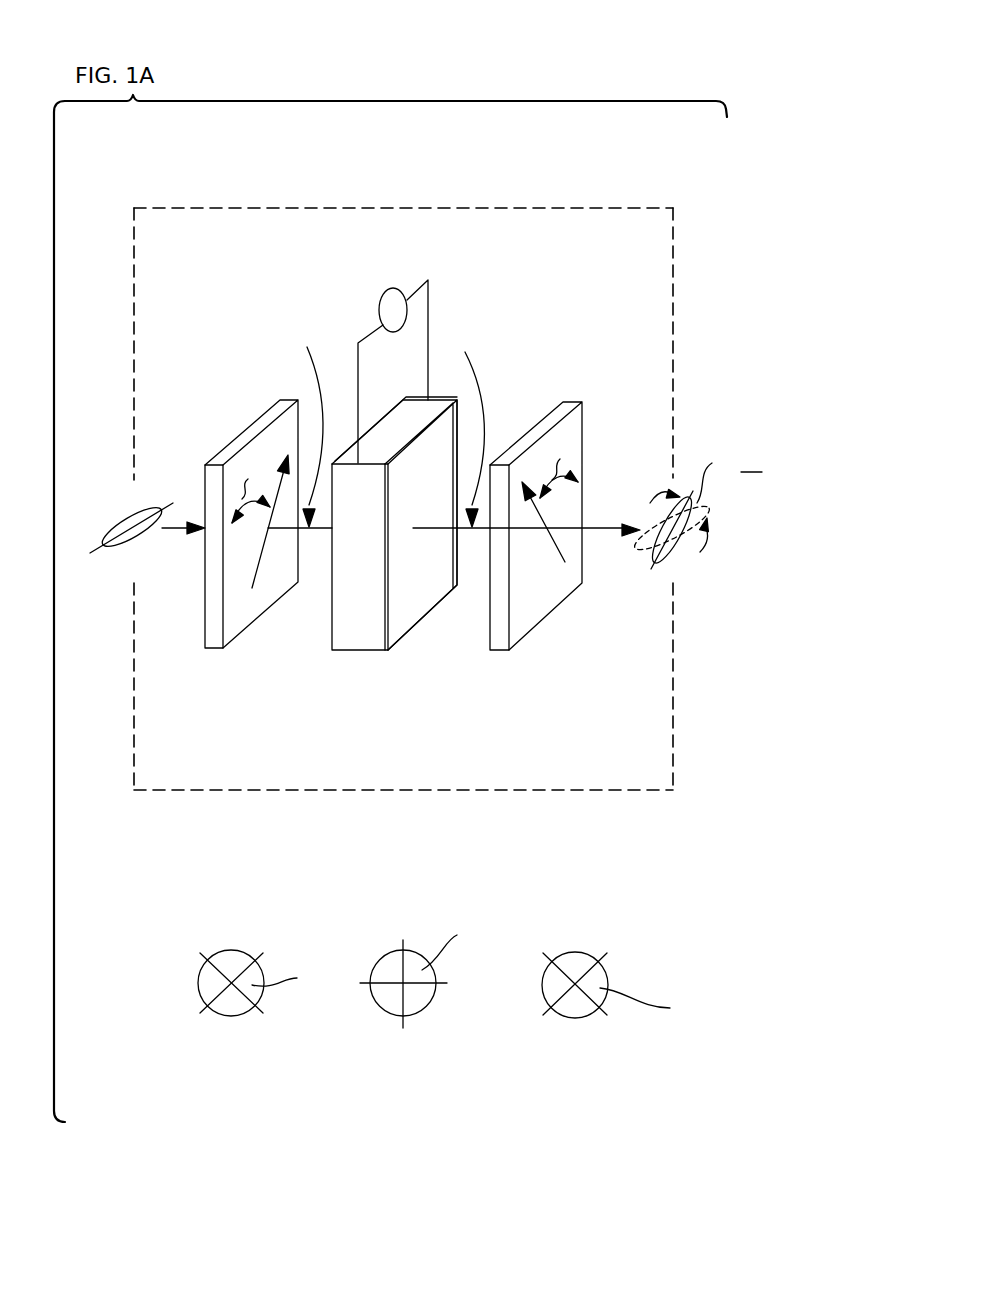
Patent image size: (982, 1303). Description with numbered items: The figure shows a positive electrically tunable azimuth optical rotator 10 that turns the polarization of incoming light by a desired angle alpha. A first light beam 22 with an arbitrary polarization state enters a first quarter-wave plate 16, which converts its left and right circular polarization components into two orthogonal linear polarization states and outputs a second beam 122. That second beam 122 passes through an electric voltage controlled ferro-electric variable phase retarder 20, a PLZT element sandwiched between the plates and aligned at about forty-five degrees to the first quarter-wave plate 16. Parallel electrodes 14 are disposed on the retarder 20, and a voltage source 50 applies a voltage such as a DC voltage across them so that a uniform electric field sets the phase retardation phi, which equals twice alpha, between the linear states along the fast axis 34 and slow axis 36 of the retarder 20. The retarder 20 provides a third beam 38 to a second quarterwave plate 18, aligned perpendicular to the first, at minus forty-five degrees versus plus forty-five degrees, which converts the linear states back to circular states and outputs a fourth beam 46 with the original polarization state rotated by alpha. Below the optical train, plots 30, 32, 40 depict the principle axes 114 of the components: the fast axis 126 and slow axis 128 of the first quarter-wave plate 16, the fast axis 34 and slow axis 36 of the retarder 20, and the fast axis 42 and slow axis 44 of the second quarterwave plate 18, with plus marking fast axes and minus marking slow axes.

The rotator 10 is at (675, 352).
The electrodes 14 is at (355, 650).
The first quarter-wave plate 16 is at (212, 650).
The second quarterwave plate 18 is at (498, 650).
The variable phase retarder 20 is at (420, 600).
The first light beam 22 is at (178, 525).
The Poincaré sphere diagram of input wave plate 30 is at (234, 995).
The Poincaré sphere diagram of crystal 32 is at (389, 1010).
The fast axis 34 is at (442, 988).
The slow axis 36 is at (398, 942).
The third beam 38 is at (470, 428).
The Poincaré sphere diagram of output wave plate 40 is at (631, 987).
The fast axis 42 is at (602, 1008).
The slow axis 44 is at (552, 552).
The fourth beam 46 is at (608, 528).
The voltage source 50 is at (383, 294).
The principle axes 114 is at (648, 918).
The second beam 122 is at (310, 427).
The fast axis 126 is at (253, 950).
The slow axis 128 is at (263, 550).